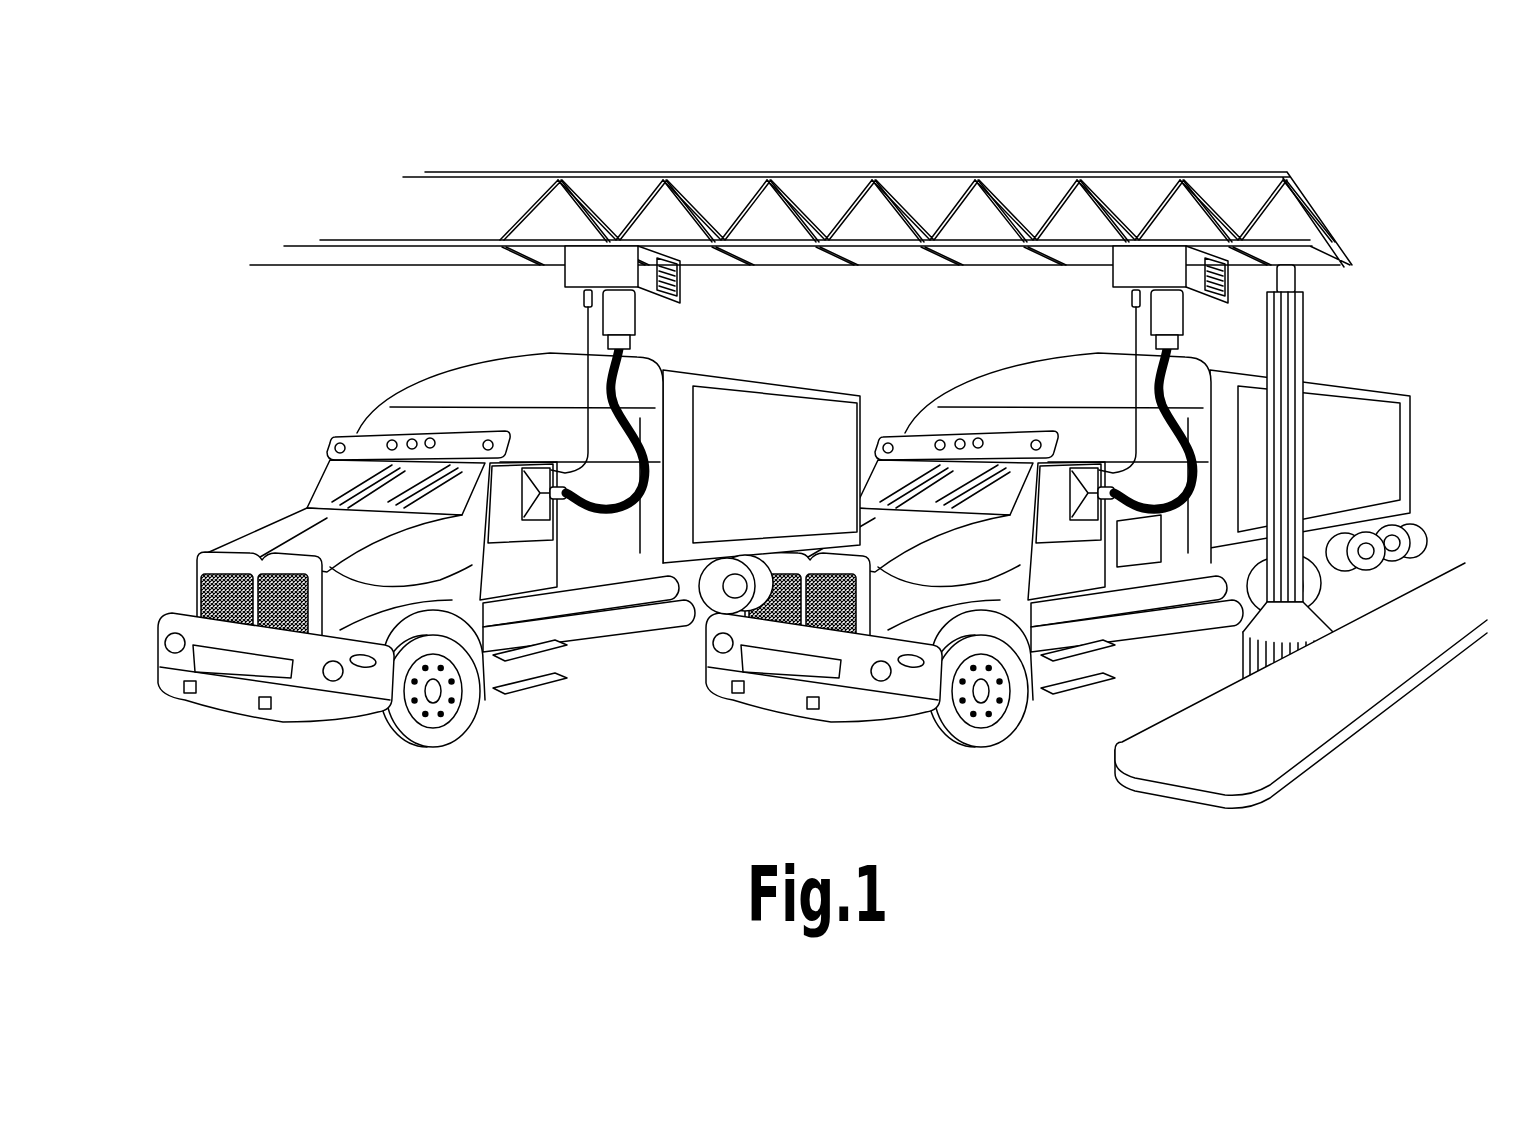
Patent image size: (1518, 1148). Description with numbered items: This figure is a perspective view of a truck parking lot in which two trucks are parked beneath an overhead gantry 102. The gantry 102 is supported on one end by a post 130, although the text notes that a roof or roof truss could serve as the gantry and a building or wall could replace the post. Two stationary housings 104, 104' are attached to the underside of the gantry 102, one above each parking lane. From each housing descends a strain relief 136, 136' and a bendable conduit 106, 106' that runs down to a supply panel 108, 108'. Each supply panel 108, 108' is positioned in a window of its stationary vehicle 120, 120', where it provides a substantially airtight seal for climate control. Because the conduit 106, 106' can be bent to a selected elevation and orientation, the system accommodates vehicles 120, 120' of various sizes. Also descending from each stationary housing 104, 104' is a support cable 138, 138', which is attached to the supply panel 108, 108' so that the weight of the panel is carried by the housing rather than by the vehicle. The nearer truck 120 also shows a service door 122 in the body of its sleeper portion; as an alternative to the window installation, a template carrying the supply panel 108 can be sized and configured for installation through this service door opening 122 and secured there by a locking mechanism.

The overhead gantry 102 is at (1252, 172).
The stationary housing 104 is at (1121, 275).
The stationary housing 104' is at (569, 274).
The conduit 106 is at (1134, 378).
The conduit 106' is at (539, 390).
The supply panel 108 is at (1093, 508).
The supply panel 108' is at (534, 527).
The stationary vehicle 120 is at (1066, 574).
The stationary vehicle 120' is at (509, 574).
The service door 122 is at (1150, 543).
The post 130 is at (1303, 323).
The strain relief 136 is at (1171, 316).
The strain relief 136' is at (658, 319).
The support cable 138 is at (1131, 300).
The support cable 138' is at (549, 306).